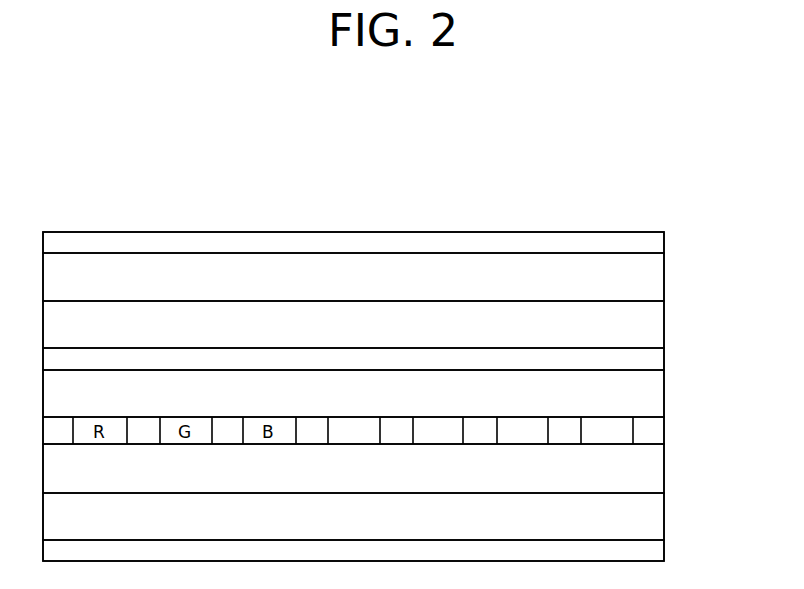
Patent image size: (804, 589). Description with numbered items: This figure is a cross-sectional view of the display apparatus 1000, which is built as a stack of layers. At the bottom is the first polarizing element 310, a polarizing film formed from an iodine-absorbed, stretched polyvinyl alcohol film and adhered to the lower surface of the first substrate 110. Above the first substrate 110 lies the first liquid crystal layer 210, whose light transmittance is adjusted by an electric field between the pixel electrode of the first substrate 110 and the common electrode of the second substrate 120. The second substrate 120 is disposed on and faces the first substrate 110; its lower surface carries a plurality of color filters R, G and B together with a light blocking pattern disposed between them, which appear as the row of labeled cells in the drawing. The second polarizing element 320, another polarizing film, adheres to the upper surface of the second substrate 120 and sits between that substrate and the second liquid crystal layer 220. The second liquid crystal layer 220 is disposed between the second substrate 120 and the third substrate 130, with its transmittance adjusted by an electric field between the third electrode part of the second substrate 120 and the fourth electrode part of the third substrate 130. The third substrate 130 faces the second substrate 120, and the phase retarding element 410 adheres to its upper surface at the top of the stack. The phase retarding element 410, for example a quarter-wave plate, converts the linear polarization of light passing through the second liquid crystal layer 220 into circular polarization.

The display apparatus 1000 is at (287, 192).
The phase retarding element 410 is at (665, 239).
The third substrate 130 is at (665, 271).
The second liquid crystal layer 220 is at (665, 325).
The second polarizing element 320 is at (665, 358).
The second substrate 120 is at (665, 399).
The first liquid crystal layer 210 is at (665, 468).
The first substrate 110 is at (665, 513).
The first polarizing element 310 is at (665, 549).